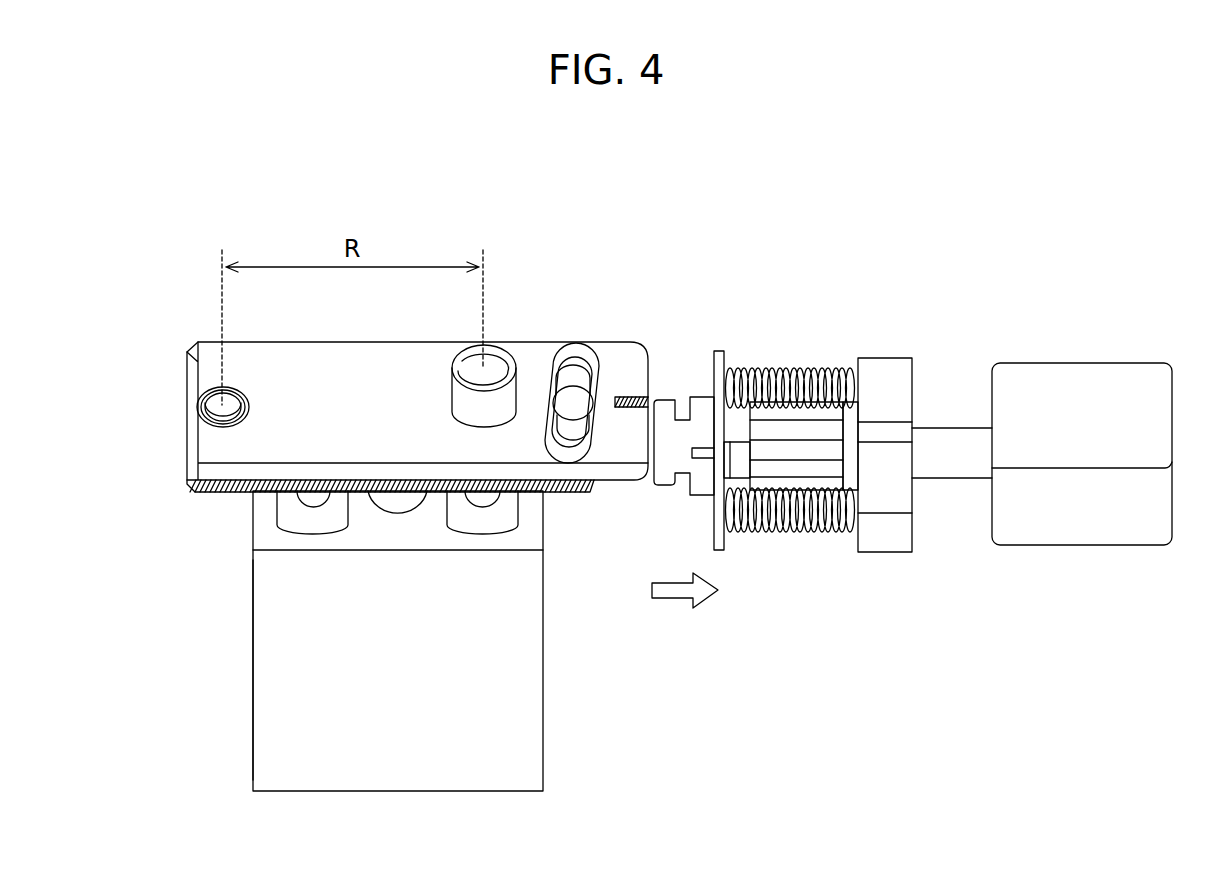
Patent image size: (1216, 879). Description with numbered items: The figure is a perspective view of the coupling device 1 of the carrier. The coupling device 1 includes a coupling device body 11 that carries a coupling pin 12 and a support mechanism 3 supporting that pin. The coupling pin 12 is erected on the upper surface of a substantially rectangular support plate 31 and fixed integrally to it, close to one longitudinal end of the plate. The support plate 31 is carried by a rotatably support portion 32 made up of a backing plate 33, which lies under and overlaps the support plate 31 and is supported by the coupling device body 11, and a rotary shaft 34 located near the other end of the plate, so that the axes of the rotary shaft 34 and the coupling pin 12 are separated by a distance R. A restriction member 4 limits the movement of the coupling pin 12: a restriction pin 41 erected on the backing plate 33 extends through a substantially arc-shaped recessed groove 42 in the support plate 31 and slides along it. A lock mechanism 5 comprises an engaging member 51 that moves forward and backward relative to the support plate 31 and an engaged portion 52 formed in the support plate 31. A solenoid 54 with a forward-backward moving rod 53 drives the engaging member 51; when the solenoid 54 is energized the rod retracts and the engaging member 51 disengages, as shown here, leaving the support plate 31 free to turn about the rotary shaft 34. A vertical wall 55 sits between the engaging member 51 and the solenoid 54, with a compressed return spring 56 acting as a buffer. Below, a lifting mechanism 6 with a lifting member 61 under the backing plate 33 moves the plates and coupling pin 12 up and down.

The coupling device 1 is at (169, 310).
The support mechanism 3 is at (217, 517).
The restriction member 4 is at (627, 247).
The lock mechanism 5 is at (766, 329).
The lifting mechanism 6 is at (531, 613).
The coupling device body 11 is at (253, 668).
The coupling pin 12 is at (458, 364).
The support plate 31 is at (200, 430).
The rotatably support portion 32 is at (365, 435).
The backing plate 33 is at (195, 492).
The rotary shaft 34 is at (205, 392).
The restriction pin 41 is at (614, 345).
The recessed groove 42 is at (571, 342).
The engaging member 51 is at (664, 402).
The engaged portion 52 is at (627, 397).
The forward-backward moving rod 53 is at (955, 470).
The solenoid 54 is at (1073, 378).
The vertical wall 55 is at (898, 555).
The return spring 56 is at (812, 540).
The lifting member 61 is at (487, 500).